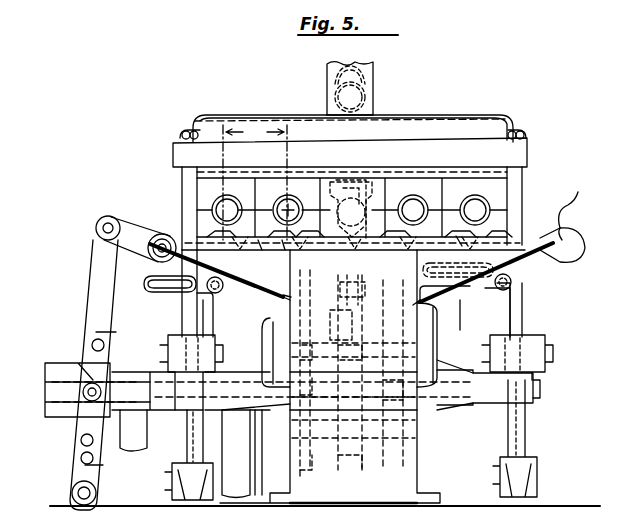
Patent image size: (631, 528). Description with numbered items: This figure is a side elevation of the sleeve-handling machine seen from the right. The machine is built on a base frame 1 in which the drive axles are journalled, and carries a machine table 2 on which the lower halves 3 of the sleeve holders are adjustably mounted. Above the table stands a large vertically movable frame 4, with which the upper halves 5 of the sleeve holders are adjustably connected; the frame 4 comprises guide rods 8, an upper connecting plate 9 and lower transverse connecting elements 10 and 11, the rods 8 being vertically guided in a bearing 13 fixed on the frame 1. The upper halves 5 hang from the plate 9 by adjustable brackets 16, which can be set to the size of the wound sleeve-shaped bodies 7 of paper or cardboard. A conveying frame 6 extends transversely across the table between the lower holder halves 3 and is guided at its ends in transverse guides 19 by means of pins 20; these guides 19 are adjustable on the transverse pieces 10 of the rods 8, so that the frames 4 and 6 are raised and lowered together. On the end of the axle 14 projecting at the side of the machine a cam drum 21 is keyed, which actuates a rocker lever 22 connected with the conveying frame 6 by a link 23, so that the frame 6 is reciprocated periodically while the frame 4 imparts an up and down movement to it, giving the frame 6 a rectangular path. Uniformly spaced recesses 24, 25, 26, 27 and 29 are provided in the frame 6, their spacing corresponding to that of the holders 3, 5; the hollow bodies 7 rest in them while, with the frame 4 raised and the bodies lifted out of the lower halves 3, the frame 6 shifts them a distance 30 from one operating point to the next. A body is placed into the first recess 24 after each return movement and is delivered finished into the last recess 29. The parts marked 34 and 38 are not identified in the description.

The base frame 1 is at (346, 498).
The machine table 2 is at (432, 300).
The lower halves of the sleeve holders 3 is at (516, 210).
The vertically movable frame 4 is at (440, 143).
The upper halves of the sleeve holders 5 is at (517, 184).
The conveying frame 6 is at (573, 243).
The sleeve-shaped bodies 7 is at (351, 210).
The guide rods 8 is at (183, 313).
The upper connecting plate 9 is at (413, 119).
The lower transverse connecting element 10 is at (532, 352).
The lower transverse connecting element 11 is at (538, 472).
The bearing 13 is at (540, 403).
The axle 14 is at (167, 393).
The bracket 16 is at (338, 173).
The transverse guide 19 is at (487, 290).
The pin 20 is at (514, 287).
The cam drum 21 is at (72, 407).
The rocker lever 22 is at (98, 298).
The link 23 is at (126, 230).
The recess 24 is at (250, 235).
The recess 25 is at (365, 231).
The recess 26 is at (344, 224).
The recess 27 is at (368, 228).
The recess 29 is at (575, 216).
The distance 30 is at (255, 180).
The bearing 34 is at (366, 73).
The bearing block 38 is at (327, 80).